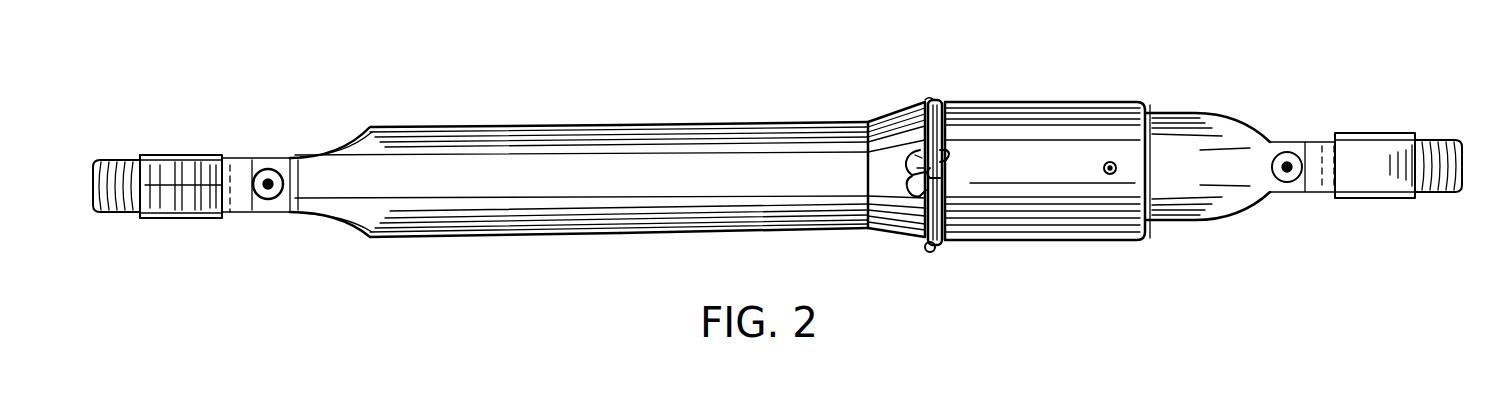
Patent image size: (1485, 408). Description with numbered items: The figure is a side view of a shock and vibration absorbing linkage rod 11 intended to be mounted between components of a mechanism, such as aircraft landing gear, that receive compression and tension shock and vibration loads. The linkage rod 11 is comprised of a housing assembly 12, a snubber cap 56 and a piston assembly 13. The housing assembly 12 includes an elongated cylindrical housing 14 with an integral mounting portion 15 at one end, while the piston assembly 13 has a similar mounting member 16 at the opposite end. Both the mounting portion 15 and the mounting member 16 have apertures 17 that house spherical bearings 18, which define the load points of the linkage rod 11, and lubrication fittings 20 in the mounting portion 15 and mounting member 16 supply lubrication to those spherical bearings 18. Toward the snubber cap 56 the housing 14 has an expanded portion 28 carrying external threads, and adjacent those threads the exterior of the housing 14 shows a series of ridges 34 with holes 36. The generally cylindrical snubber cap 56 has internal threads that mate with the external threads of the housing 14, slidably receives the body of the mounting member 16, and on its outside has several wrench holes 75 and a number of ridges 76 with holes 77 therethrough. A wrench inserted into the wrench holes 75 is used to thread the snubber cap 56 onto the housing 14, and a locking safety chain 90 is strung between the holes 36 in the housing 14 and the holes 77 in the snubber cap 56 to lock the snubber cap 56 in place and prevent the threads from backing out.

The linkage rod 11 is at (452, 118).
The housing assembly 12 is at (616, 118).
The piston assembly 13 is at (1215, 124).
The housing 14 is at (526, 188).
The mounting portion 15 is at (125, 160).
The mounting member 16 is at (1440, 195).
The apertures 17 is at (232, 215).
The spherical bearings 18 is at (165, 220).
The lubrication fittings 20 is at (272, 200).
The expanded portion 28 is at (930, 175).
The ridges 34 is at (920, 246).
The holes 36 is at (925, 104).
The snubber cap 56 is at (1088, 176).
The wrench holes 75 is at (1110, 160).
The ridges 76 is at (942, 174).
The holes 77 is at (942, 162).
The locking safety chain 90 is at (957, 100).